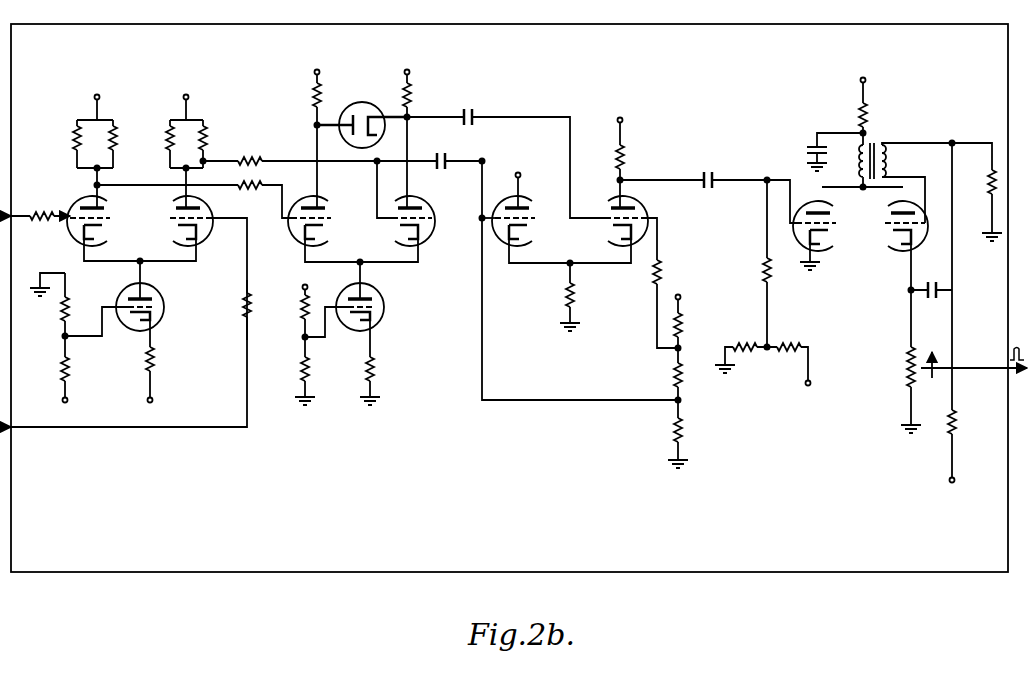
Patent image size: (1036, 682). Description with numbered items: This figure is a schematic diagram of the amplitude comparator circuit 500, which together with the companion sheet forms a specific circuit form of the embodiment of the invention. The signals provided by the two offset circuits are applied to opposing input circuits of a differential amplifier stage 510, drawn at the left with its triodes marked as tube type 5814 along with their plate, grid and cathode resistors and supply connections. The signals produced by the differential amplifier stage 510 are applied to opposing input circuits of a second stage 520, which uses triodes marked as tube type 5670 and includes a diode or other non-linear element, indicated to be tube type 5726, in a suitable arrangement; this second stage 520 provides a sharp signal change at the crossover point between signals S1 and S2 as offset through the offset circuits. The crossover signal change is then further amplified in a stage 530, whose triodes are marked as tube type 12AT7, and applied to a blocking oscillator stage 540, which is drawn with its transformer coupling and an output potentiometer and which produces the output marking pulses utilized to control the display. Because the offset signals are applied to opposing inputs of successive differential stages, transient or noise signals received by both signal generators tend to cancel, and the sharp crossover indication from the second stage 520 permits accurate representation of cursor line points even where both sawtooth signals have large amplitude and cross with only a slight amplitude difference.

The amplitude comparator circuit 500 is at (380, 24).
The differential amplifier stage 510 is at (241, 302).
The second stage 520 is at (455, 291).
The amplifier stage 530 is at (658, 316).
The blocking oscillator stage 540 is at (895, 296).
The 5814 twin triode tube 5814 is at (77, 238).
The 5670 twin triode tube 5670 is at (460, 189).
The tube type 5726 is at (383, 71).
The 12AT7 twin triode tube 12AT7 is at (905, 251).